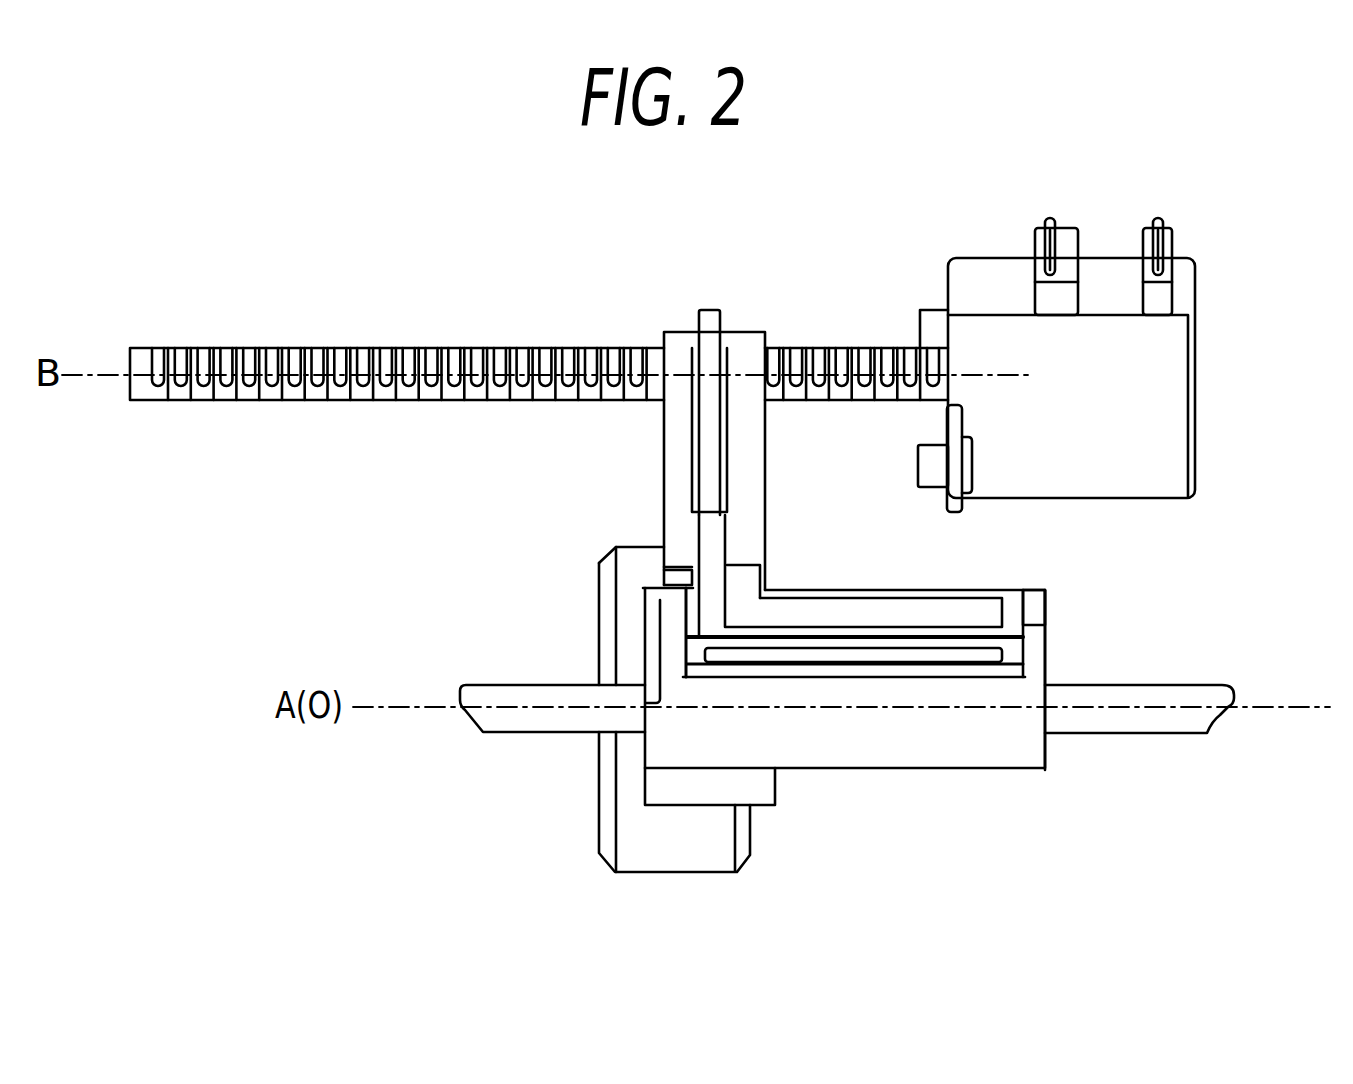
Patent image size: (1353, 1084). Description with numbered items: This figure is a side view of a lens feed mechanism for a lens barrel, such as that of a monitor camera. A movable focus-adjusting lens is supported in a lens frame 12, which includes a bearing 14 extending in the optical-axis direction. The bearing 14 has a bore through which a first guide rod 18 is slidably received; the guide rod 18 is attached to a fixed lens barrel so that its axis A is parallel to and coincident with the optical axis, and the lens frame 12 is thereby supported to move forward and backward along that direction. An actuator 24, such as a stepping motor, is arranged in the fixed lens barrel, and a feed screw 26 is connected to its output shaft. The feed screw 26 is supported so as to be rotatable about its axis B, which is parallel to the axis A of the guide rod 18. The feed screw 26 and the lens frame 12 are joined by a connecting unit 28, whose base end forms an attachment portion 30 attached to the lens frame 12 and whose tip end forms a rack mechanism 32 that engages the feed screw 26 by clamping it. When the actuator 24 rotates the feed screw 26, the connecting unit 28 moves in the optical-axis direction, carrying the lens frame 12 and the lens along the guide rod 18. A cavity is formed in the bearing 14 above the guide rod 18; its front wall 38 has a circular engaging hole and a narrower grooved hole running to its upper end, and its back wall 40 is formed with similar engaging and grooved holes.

The lens frame 12 is at (675, 852).
The bearing 14 is at (892, 740).
The first guide rod 18 is at (543, 717).
The actuator 24 is at (1138, 398).
The feed screw 26 is at (345, 347).
The connecting unit 28 is at (800, 557).
The attachment portion 30 is at (860, 604).
The rack mechanism 32 is at (624, 453).
The front wall 38 is at (668, 607).
The back wall 40 is at (1037, 607).